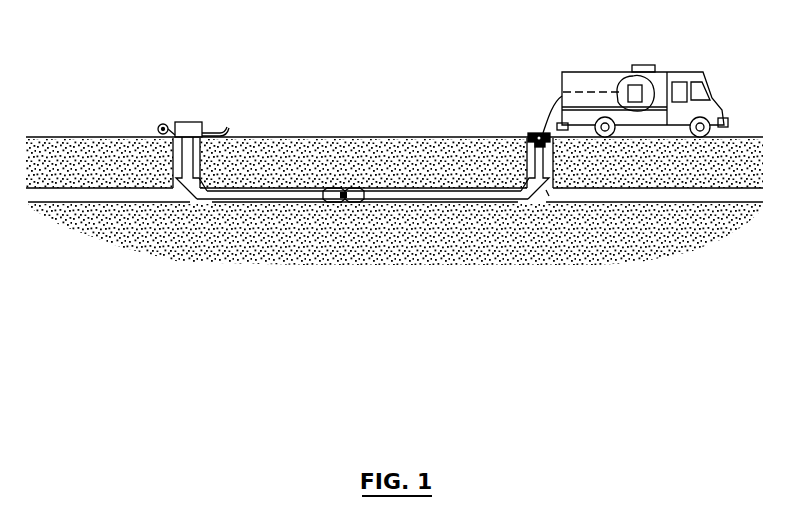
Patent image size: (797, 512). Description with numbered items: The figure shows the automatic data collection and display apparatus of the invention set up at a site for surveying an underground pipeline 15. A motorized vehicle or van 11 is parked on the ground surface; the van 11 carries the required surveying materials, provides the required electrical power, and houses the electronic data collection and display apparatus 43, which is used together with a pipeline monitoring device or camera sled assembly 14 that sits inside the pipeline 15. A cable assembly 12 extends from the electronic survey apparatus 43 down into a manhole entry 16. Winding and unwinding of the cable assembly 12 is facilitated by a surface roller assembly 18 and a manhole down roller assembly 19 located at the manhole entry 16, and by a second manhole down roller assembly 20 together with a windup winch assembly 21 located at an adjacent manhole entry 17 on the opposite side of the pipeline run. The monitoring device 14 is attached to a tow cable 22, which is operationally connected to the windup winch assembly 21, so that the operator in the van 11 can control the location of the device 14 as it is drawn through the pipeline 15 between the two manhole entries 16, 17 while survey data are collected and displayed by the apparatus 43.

The van 11 is at (587, 82).
The cable assembly 12 is at (543, 107).
The camera sled assembly 14 is at (340, 203).
The pipeline 15 is at (547, 192).
The manhole entry 16 is at (530, 160).
The adjacent manhole entry 17 is at (176, 162).
The surface roller assembly 18 is at (531, 133).
The manhole down roller assembly 19 is at (531, 195).
The manhole down roller assembly 20 is at (196, 196).
The windup winch assembly 21 is at (190, 130).
The tow cable 22 is at (262, 201).
The electronic data collection and display apparatus 43 is at (648, 92).